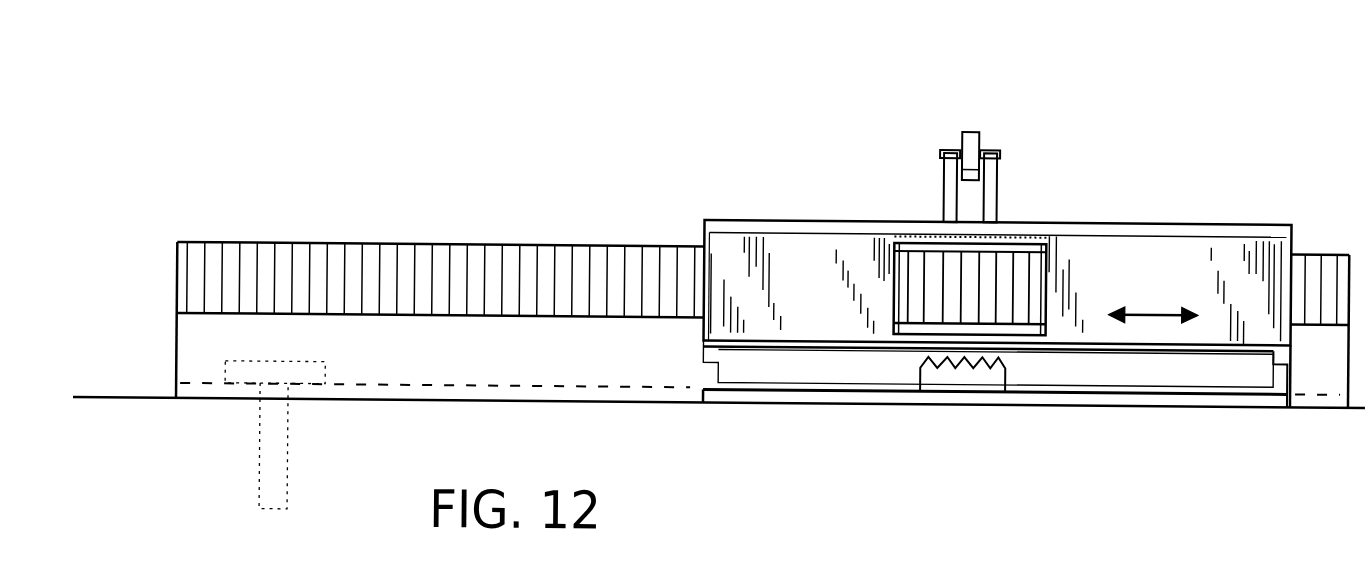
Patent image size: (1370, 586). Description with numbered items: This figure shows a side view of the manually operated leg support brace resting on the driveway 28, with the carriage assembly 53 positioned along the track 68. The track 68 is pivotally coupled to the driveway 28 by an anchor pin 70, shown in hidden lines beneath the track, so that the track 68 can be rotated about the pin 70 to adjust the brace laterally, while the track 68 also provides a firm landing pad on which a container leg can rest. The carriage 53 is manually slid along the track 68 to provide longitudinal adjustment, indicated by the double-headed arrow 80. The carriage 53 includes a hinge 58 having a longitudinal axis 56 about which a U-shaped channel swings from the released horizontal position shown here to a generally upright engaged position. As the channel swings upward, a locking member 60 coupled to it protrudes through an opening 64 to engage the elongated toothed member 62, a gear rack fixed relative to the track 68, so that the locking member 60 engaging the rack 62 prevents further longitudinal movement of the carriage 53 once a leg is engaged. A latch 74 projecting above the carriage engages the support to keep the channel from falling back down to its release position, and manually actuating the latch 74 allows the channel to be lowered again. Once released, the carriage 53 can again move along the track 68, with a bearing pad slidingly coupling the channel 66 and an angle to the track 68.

The driveway 28 is at (147, 396).
The carriage assembly 53 is at (1117, 141).
The longitudinal axis 56 is at (702, 340).
The hinge 58 is at (1277, 347).
The locking member 60 is at (960, 372).
The elongated toothed member 62 is at (495, 241).
The opening 64 is at (893, 283).
The channel 66 is at (1160, 214).
The track 68 is at (176, 337).
The anchor pin 70 is at (280, 358).
The latch 74 is at (970, 124).
The longitudinal adjustment 80 is at (1137, 301).